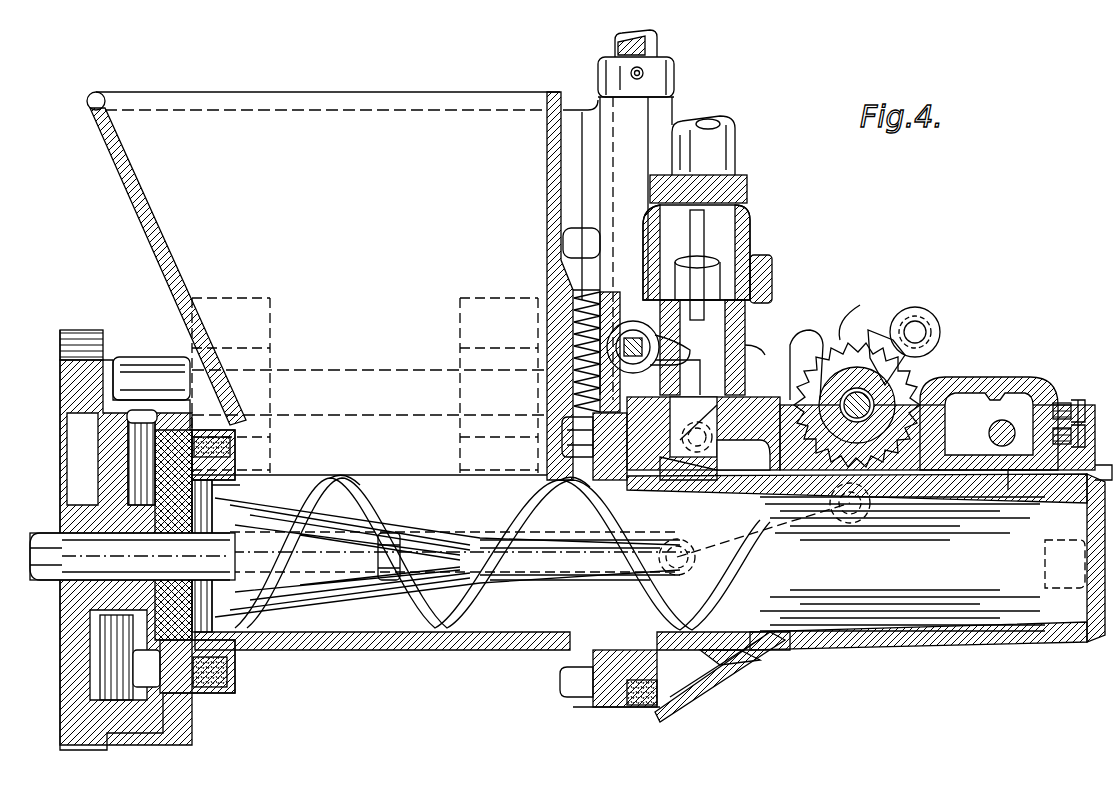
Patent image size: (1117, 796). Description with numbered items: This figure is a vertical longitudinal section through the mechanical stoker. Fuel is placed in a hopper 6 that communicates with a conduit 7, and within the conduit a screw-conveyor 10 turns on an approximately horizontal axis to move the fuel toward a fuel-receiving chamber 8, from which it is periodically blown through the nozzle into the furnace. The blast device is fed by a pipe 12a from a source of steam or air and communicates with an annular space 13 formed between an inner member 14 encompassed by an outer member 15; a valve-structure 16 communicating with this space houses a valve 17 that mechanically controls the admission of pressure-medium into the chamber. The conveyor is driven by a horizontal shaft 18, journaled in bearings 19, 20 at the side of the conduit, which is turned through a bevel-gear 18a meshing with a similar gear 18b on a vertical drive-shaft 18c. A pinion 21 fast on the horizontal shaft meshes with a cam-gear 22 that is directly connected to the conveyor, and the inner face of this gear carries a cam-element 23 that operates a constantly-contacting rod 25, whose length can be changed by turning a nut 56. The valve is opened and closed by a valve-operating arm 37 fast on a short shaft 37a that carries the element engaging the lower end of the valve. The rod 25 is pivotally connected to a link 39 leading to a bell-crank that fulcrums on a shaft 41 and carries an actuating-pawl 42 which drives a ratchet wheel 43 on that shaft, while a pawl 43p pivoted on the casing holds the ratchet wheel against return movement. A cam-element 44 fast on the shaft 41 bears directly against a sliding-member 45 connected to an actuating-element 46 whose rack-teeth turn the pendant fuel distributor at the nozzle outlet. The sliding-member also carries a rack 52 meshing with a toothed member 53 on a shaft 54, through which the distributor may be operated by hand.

The hopper 6 is at (258, 95).
The conduit 7 is at (386, 633).
The fuel-receiving chamber 8 is at (965, 632).
The screw-conveyor 10 is at (346, 490).
The pipe 12a is at (735, 150).
The annular space 13 is at (765, 473).
The inner member 14 is at (680, 675).
The outer member 15 is at (738, 665).
The valve-structure 16 is at (748, 228).
The valve 17 is at (755, 345).
The horizontal shaft 18 is at (362, 372).
The bevel-gear 18a is at (546, 292).
The bevel-gear 18b is at (582, 292).
The vertical drive-shaft 18c is at (658, 50).
The bearing 19 is at (462, 318).
The bearing 20 is at (232, 300).
The pinion 21 is at (84, 331).
The cam-gear 22 is at (60, 488).
The cam-element 23 is at (168, 712).
The rod 25 is at (428, 560).
The valve-operating arm 37 is at (660, 357).
The short shaft 37a is at (677, 377).
The link 39 is at (815, 515).
The shaft 41 is at (775, 452).
The actuating-pawl 42 is at (910, 308).
The ratchet wheel 43 is at (862, 335).
The pawl 43p is at (842, 330).
The cam-element 44 is at (848, 350).
The sliding-member 45 is at (1028, 380).
The actuating-element 46 is at (1068, 402).
The rack 52 is at (980, 395).
The toothed member 53 is at (988, 433).
The shaft 54 is at (1015, 493).
The nut 56 is at (395, 535).